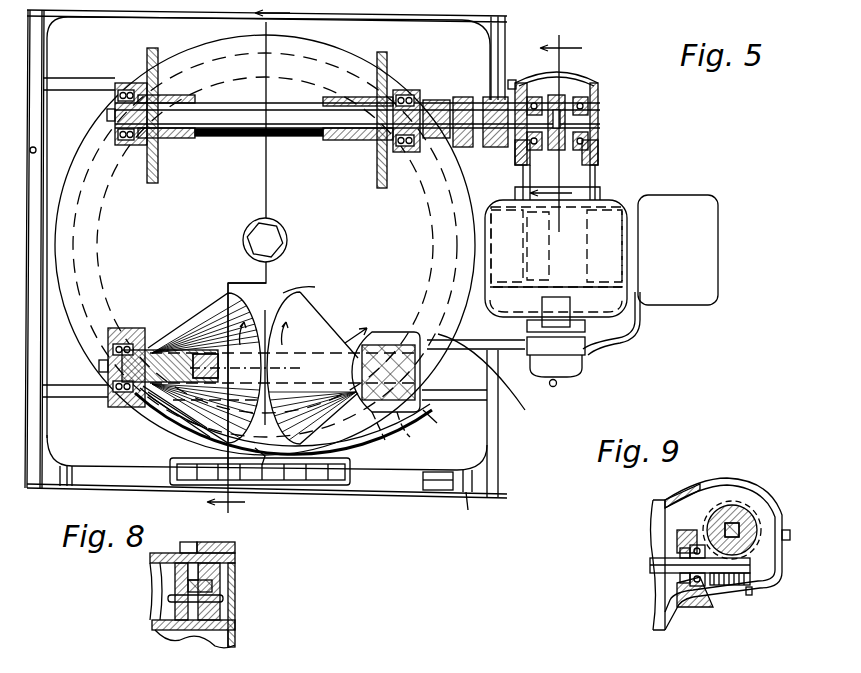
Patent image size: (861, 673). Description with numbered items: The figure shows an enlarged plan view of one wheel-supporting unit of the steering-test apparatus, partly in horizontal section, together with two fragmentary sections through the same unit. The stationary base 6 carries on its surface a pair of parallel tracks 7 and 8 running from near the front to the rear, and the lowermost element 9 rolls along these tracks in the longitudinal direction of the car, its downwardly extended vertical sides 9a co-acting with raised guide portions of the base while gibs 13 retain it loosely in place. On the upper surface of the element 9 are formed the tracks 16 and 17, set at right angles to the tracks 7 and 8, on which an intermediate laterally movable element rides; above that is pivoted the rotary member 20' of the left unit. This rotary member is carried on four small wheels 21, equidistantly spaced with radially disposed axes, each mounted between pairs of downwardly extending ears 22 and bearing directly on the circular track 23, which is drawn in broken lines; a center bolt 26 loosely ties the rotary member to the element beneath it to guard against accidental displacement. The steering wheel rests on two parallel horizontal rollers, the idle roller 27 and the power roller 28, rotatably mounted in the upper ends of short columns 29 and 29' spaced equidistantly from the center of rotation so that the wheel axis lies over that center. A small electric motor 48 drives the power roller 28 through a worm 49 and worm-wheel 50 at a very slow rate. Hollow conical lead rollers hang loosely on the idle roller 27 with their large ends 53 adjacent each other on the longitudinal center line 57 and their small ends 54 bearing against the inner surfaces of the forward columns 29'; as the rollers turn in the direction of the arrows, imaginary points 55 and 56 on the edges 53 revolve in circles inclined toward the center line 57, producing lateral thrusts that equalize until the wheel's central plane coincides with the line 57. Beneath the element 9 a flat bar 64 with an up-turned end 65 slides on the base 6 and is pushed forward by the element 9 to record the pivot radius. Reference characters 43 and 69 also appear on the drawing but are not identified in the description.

In FIG. 5, the stationary base 6 is at (276, 18).
In FIG. 5, the track 7 is at (60, 478).
In FIG. 5, the track 8 is at (410, 422).
In FIG. 5, the lowermost movable element 9 is at (563, 133).
In FIG. 5, the vertical sides 9a is at (40, 417).
In FIG. 5, the gibs 13 is at (32, 478).
In FIG. 5, the track 16 is at (55, 393).
In FIG. 5, the track 17 is at (65, 79).
In FIG. 8, the rotary member 20' is at (166, 595).
In FIG. 5, the small wheels 21 is at (394, 440).
In FIG. 8, the small wheels 21 is at (235, 646).
In FIG. 5, the ears 22 is at (412, 422).
In FIG. 8, the ears 22 is at (235, 577).
In FIG. 5, the circular track 23 is at (102, 263).
In FIG. 5, the center bolt 26 is at (273, 243).
In FIG. 5, the idle roller 27 is at (197, 362).
In FIG. 5, the power roller 28 is at (218, 142).
In FIG. 5, the short column 29 is at (286, 121).
In FIG. 8, the short column 29' is at (243, 576).
In FIG. 5, the tray support 43 is at (257, 463).
In FIG. 5, the electric motor 48 is at (607, 217).
In FIG. 9, the electric motor 48 is at (660, 605).
In FIG. 9, the worm 49 is at (752, 588).
In FIG. 5, the worm-wheel 50 is at (600, 100).
In FIG. 9, the worm-wheel 50 is at (750, 520).
In FIG. 5, the large ends 53 is at (286, 292).
In FIG. 5, the small ends 54 is at (152, 347).
In FIG. 5, the imaginary point 55 is at (280, 432).
In FIG. 5, the imaginary point 56 is at (303, 425).
In FIG. 5, the longitudinal center line 57 is at (267, 316).
In FIG. 5, the flat bar 64 is at (457, 477).
In FIG. 5, the up-turned end 65 is at (440, 488).
In FIG. 5, the bottom plate 69 is at (398, 483).